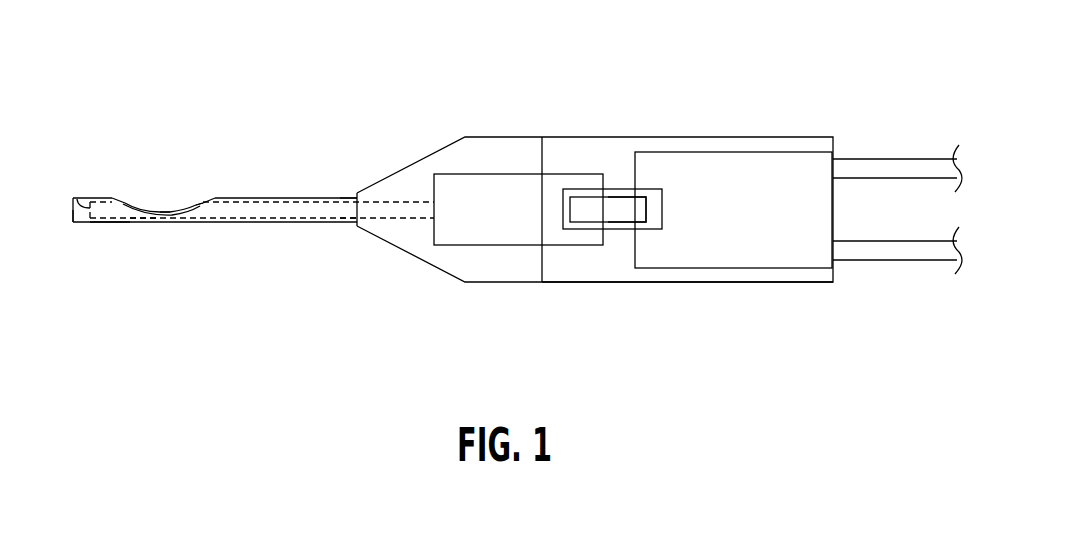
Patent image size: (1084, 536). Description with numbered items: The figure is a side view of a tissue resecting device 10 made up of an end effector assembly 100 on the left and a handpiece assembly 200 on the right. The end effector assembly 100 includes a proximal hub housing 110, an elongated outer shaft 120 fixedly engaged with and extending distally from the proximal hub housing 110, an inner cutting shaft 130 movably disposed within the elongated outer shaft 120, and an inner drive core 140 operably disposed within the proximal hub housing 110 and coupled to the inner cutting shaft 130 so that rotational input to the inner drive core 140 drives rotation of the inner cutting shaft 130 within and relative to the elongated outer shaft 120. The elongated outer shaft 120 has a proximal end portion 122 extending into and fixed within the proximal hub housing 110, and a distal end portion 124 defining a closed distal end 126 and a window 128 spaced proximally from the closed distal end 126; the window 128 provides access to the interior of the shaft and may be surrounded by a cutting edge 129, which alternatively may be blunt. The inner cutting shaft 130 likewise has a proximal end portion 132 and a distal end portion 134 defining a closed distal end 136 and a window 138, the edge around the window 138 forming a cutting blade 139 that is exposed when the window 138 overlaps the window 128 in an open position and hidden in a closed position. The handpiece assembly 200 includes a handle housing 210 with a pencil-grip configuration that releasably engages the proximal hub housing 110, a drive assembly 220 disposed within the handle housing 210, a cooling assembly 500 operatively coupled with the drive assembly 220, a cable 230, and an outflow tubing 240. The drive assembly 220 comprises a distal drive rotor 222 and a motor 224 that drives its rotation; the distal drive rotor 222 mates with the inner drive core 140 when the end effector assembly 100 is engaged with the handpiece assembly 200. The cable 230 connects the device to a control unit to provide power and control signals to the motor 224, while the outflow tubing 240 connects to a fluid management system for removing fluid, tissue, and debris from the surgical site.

The tissue resecting device 10 is at (379, 83).
The end effector assembly 100 is at (540, 322).
The proximal hub housing 110 is at (506, 129).
The elongated outer shaft 120 is at (268, 197).
The proximal end portion 122 is at (357, 194).
The distal end portion 124 is at (105, 223).
The closed distal end 126 is at (70, 223).
The window 128 is at (120, 201).
The cutting edge 129 is at (168, 212).
The inner cutting shaft 130 is at (263, 223).
The proximal end portion 132 is at (348, 219).
The distal end portion 134 is at (146, 219).
The closed distal end 136 is at (80, 198).
The window 138 is at (182, 207).
The cutting blade 139 is at (204, 207).
The inner drive core 140 is at (487, 217).
The handpiece assembly 200 is at (719, 106).
The handle housing 210 is at (738, 283).
The drive assembly 220 is at (618, 189).
The distal drive rotor 222 is at (584, 214).
The motor 224 is at (625, 214).
The cable 230 is at (887, 159).
The outflow tubing 240 is at (886, 260).
The cooling assembly 500 is at (794, 152).